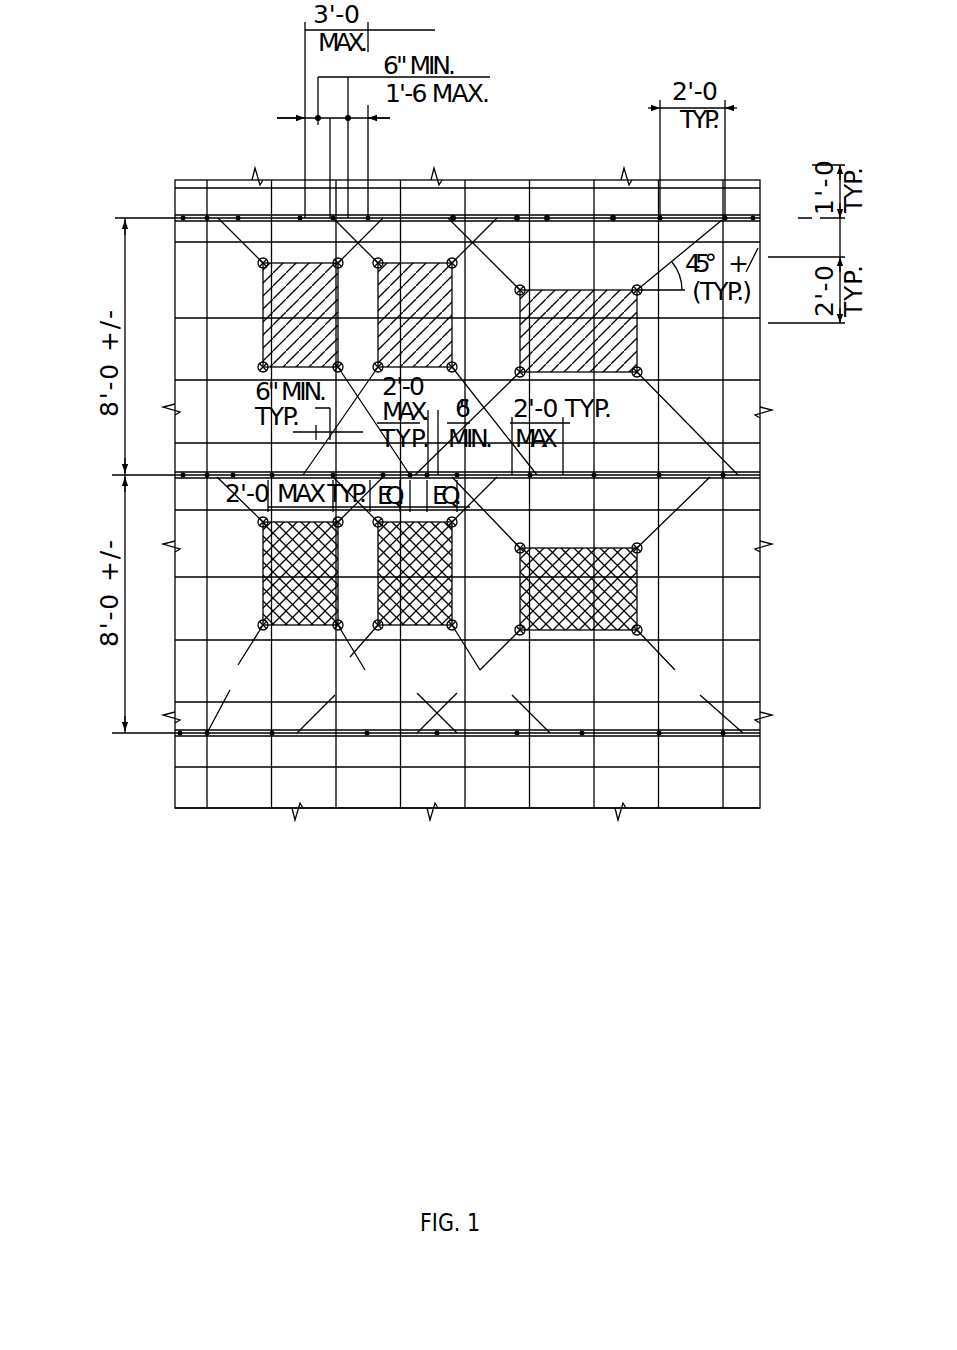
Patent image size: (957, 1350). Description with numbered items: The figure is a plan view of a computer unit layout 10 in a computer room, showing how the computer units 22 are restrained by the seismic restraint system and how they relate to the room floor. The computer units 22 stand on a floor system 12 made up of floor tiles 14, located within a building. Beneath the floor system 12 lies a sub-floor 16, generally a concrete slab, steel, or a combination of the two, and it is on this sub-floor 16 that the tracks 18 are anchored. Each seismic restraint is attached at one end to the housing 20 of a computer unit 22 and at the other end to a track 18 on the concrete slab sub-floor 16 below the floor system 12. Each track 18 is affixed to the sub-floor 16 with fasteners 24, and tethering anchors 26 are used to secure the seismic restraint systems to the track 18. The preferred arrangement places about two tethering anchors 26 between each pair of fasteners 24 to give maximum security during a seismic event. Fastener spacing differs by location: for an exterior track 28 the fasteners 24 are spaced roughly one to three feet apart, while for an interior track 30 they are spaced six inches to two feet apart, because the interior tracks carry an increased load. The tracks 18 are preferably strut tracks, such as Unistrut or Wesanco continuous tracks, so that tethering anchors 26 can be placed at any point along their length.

The computer unit layout 10 is at (137, 277).
The floor system 12 is at (137, 763).
The floor tiles 14 is at (237, 757).
The sub-floor 16 is at (640, 757).
The track 18 is at (578, 743).
The housing 20 is at (263, 597).
The computer units 22 is at (397, 650).
The fasteners 24 is at (613, 218).
The tethering anchors 26 is at (517, 218).
The exterior track 28 is at (232, 217).
The interior track 30 is at (263, 367).